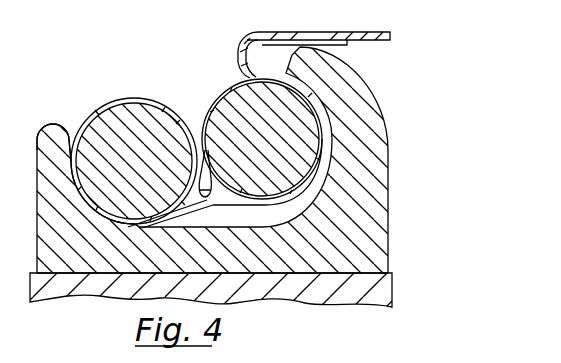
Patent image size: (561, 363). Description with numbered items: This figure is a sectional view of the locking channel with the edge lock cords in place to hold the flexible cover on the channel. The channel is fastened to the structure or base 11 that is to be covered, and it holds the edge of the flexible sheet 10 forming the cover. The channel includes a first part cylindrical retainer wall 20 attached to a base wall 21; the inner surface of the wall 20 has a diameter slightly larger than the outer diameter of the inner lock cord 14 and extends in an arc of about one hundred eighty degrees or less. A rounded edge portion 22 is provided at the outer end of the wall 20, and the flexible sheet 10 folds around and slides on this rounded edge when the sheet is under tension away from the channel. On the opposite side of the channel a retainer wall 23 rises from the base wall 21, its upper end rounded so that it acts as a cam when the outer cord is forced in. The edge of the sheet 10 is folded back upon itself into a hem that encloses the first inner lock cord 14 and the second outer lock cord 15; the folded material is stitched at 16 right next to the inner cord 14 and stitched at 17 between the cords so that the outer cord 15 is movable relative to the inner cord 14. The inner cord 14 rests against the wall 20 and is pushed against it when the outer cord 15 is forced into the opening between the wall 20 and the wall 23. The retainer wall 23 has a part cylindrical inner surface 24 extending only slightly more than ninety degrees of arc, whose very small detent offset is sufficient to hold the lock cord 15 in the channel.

The flexible sheet 10 is at (368, 10).
The base 11 is at (383, 295).
The inner lock cord 14 is at (243, 100).
The outer lock cord 15 is at (136, 108).
The stitching 16 is at (306, 8).
The stitching 17 is at (208, 196).
The part cylindrical retainer wall 20 is at (358, 125).
The base wall 21 is at (312, 263).
The rounded edge portion 22 is at (265, 55).
The retainer wall 23 is at (60, 130).
The part cylindrical inner surface 24 is at (76, 180).